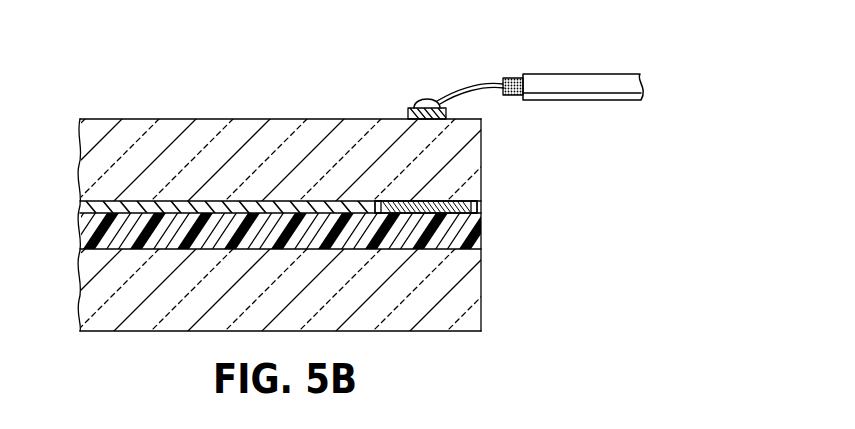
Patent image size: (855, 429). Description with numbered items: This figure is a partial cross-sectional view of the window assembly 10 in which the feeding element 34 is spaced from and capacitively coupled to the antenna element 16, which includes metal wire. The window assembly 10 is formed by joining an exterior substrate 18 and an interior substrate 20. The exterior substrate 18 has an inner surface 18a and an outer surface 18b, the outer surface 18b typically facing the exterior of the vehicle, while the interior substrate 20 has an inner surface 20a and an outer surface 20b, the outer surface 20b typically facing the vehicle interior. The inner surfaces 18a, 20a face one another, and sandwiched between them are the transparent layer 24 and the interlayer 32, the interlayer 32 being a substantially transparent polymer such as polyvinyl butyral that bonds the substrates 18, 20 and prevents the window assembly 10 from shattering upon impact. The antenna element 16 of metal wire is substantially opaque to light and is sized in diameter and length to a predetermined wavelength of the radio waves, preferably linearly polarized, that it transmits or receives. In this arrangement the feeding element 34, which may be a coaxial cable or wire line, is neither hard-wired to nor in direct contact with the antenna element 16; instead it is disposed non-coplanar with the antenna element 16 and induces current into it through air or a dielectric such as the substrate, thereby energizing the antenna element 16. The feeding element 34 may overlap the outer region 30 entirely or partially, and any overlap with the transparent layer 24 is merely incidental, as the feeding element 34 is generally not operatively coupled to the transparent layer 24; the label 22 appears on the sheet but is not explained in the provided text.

The window assembly 10 is at (392, 58).
The antenna element 16 is at (398, 208).
The exterior substrate 18 is at (119, 319).
The inner surface of the exterior substrate 18a is at (483, 240).
The outer surface of the exterior substrate 18b is at (471, 332).
The interior substrate 20 is at (145, 153).
The inner surface of the interior substrate 20a is at (483, 207).
The outer surface of the interior substrate 20b is at (471, 117).
The light assembly 22 is at (57, 0).
The transparent layer 24 is at (188, 207).
The outer region 30 is at (380, 208).
The interlayer 32 is at (172, 241).
The feeding element 34 is at (578, 83).